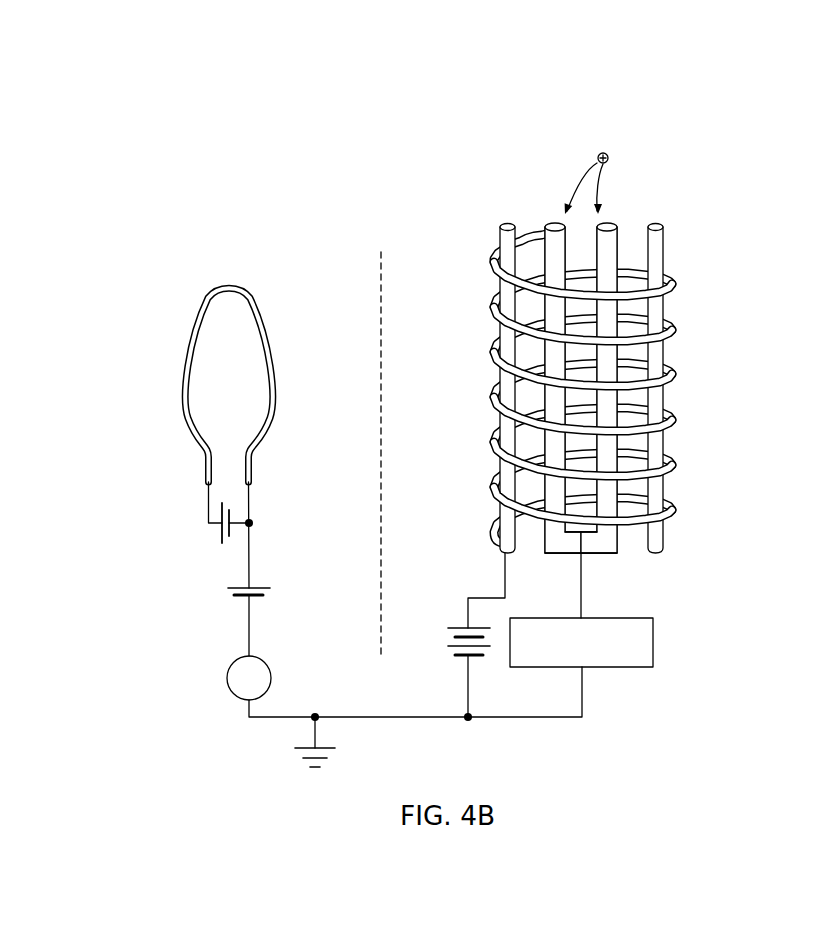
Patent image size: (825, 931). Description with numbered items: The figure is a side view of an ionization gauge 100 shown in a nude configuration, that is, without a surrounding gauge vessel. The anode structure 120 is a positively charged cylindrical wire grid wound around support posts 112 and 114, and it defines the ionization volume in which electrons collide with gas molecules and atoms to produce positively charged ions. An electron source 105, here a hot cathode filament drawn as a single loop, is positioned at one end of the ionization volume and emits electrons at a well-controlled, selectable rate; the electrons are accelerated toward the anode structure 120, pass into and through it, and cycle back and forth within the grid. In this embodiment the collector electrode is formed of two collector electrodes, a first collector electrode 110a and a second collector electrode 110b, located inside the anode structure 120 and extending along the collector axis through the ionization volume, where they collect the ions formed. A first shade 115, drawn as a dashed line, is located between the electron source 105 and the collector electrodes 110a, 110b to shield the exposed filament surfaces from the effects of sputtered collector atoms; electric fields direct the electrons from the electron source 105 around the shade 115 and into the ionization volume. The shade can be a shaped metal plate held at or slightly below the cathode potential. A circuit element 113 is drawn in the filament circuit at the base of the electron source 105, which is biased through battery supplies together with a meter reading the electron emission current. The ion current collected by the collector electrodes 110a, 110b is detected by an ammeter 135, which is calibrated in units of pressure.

The ionization gauge 100 is at (285, 103).
The electron source 105 is at (203, 312).
The first collector electrode 110a is at (555, 224).
The second collector electrode 110b is at (608, 224).
The support post 112 is at (507, 225).
The capacitor 113 is at (221, 534).
The support post 114 is at (655, 224).
The first shade 115 is at (381, 268).
The anode structure 120 is at (673, 287).
The ammeter 135 is at (618, 667).